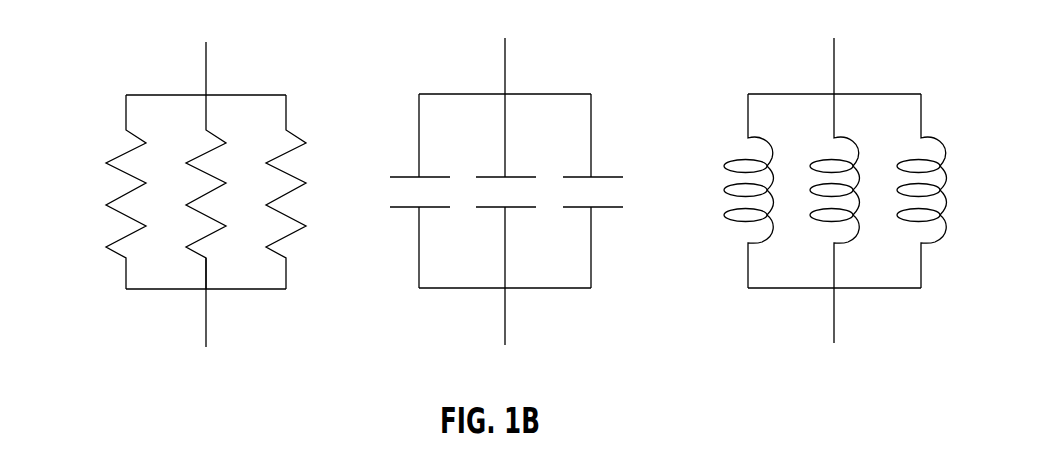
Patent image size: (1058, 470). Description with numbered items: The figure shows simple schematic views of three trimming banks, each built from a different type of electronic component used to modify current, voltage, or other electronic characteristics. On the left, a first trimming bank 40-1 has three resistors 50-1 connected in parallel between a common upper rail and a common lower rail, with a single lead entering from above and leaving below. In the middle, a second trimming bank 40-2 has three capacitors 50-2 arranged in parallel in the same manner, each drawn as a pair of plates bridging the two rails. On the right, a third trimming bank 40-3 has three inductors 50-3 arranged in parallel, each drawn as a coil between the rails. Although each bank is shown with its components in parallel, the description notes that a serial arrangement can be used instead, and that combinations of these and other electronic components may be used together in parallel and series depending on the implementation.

The first trimming bank 40-1 is at (265, 38).
The second trimming bank 40-2 is at (586, 31).
The third trimming bank 40-3 is at (871, 32).
The resistors 50-1 is at (127, 150).
The capacitors 50-2 is at (403, 175).
The inductors 50-3 is at (738, 162).